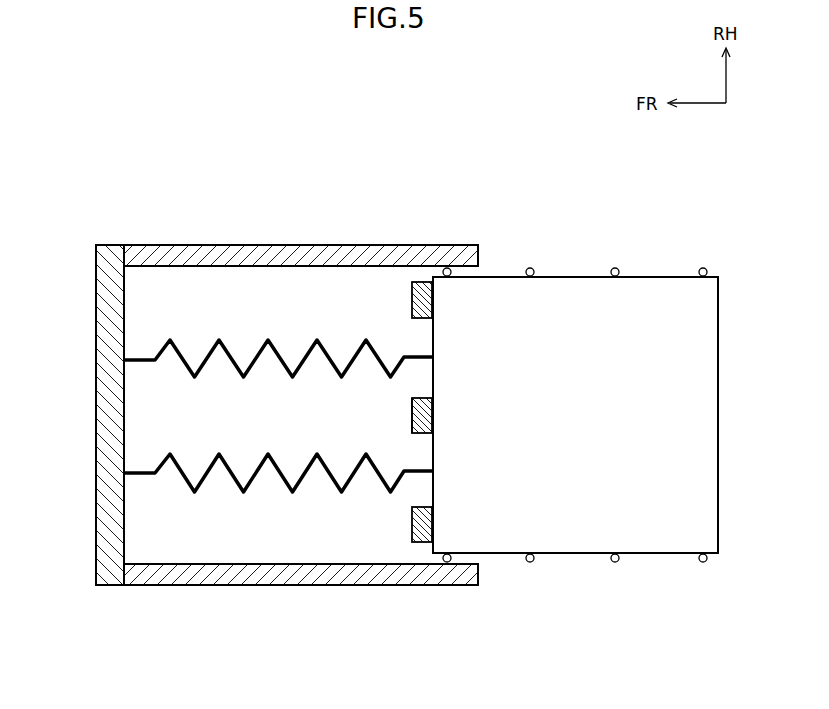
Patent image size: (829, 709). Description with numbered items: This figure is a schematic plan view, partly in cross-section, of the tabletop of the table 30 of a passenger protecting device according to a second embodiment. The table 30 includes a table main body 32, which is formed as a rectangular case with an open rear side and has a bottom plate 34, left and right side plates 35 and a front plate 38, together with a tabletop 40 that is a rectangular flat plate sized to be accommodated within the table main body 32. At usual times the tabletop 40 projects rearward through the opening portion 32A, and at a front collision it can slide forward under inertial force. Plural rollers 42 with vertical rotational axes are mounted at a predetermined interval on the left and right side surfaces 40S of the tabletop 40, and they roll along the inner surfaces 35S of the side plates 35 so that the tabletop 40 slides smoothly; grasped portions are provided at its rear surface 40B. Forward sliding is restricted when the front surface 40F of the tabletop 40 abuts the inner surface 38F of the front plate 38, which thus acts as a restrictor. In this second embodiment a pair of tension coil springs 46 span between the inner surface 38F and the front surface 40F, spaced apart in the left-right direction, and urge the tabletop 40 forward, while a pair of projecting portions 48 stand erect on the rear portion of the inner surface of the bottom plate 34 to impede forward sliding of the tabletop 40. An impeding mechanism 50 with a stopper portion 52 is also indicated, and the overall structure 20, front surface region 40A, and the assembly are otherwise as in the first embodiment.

The battery holding structure 20 is at (226, 205).
The table 30 is at (166, 232).
The table main body 32 is at (97, 240).
The opening portion 32A is at (478, 566).
The bottom plate 34 is at (146, 548).
The side plate 35 is at (316, 240).
The inner surface of side plate 35S is at (180, 268).
The front plate 38 is at (93, 356).
The inner surface of front plate 38F is at (124, 402).
The tabletop 40 is at (724, 426).
The battery front surface 40A is at (434, 376).
The rear surface of tabletop 40B is at (720, 343).
The front surface of tabletop 40F is at (432, 448).
The side surface of tabletop 40S is at (666, 276).
The roller 42 is at (530, 268).
The tension coil spring 46 is at (269, 338).
The projecting portion 48 is at (404, 285).
The impeding mechanism 50 is at (407, 408).
The stopper portion 52 is at (411, 431).